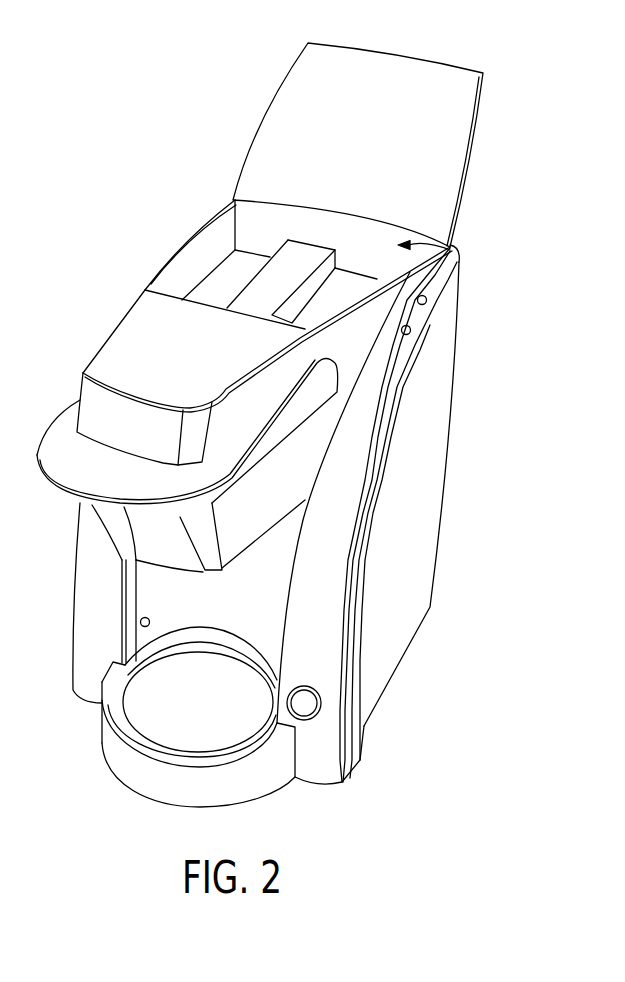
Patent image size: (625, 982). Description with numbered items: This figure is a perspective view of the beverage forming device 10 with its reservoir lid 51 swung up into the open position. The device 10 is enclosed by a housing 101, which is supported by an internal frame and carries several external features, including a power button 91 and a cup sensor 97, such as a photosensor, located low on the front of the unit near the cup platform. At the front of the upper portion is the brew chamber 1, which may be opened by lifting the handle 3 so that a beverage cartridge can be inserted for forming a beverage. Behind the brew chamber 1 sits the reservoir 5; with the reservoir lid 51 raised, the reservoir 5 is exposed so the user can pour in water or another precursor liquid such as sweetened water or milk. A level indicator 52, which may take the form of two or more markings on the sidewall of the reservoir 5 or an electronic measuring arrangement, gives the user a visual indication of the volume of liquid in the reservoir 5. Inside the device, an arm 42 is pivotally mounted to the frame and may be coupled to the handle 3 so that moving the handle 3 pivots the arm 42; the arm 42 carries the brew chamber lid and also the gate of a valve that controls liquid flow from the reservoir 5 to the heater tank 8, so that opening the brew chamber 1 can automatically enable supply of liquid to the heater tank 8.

The brew chamber 1 is at (65, 362).
The handle 3 is at (58, 442).
The reservoir 5 is at (143, 265).
The heater tank 8 is at (352, 257).
The beverage forming device 10 is at (72, 178).
The arm 42 is at (283, 268).
The reservoir lid 51 is at (388, 68).
The level indicator 52 is at (458, 268).
The power button 91 is at (305, 692).
The cup sensor 97 is at (150, 621).
The housing 101 is at (432, 512).